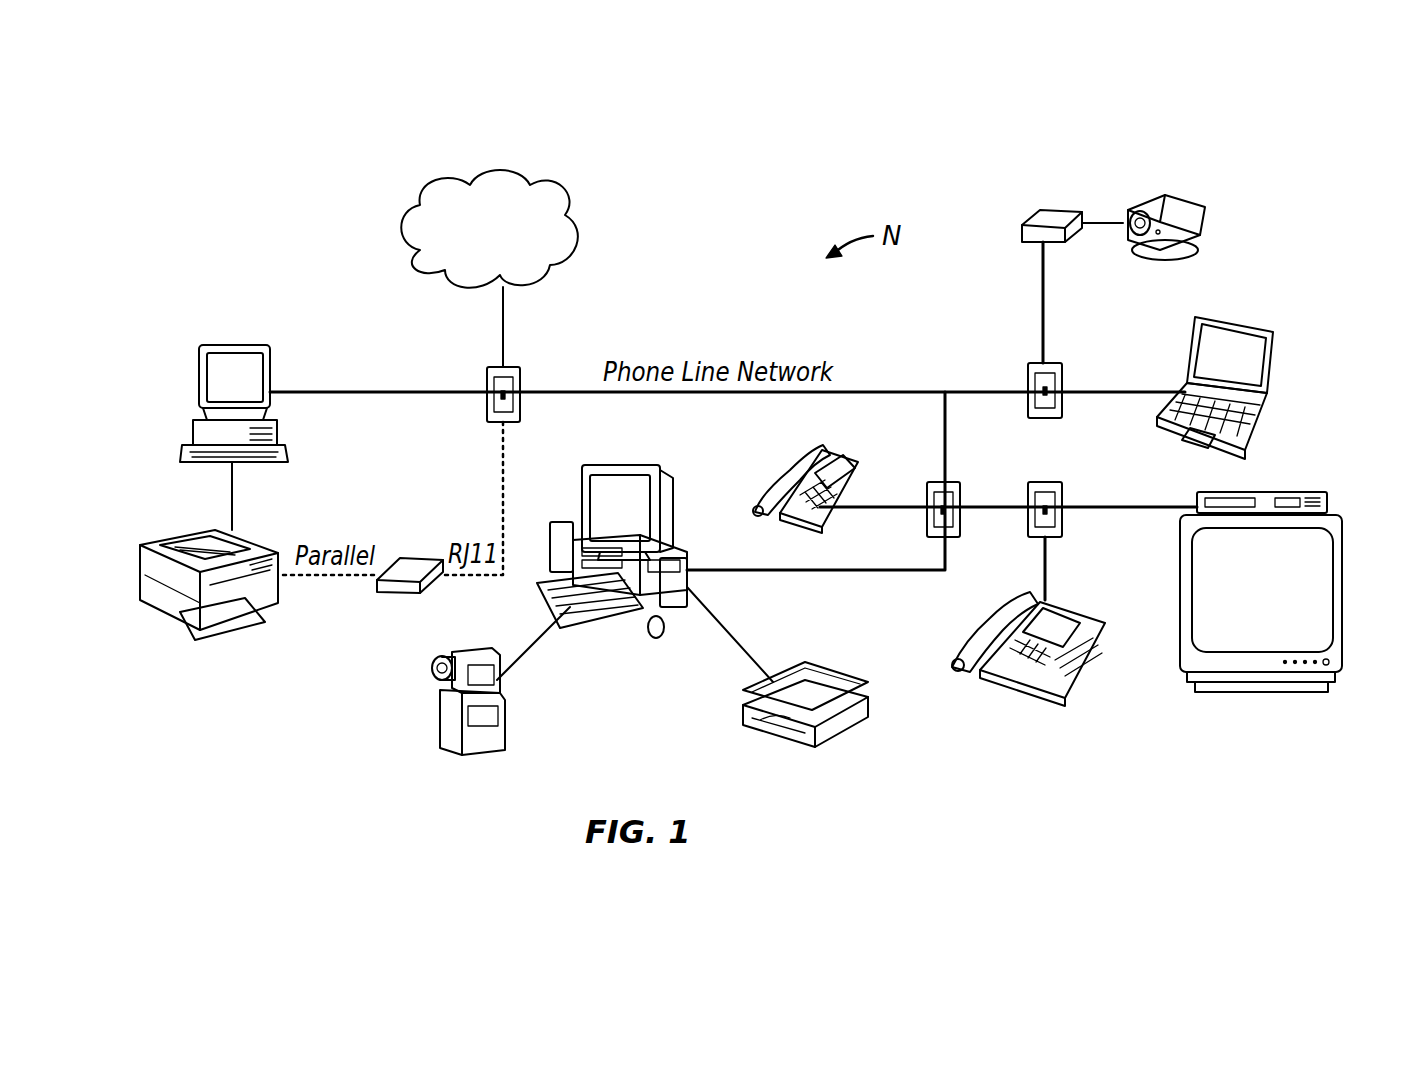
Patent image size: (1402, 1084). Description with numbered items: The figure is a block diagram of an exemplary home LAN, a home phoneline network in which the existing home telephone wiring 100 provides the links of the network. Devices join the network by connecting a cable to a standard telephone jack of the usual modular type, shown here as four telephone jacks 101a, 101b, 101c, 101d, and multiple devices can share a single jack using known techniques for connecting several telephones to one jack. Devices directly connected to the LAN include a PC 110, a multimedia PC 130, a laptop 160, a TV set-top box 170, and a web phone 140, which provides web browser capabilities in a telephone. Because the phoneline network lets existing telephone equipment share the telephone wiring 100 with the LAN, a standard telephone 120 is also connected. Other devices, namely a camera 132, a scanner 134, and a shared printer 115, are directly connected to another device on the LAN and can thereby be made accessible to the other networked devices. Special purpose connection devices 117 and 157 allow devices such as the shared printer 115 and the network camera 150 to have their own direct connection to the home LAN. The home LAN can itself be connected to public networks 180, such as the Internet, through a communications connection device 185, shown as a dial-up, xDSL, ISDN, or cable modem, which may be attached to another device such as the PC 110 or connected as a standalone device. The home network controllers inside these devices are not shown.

The home telephone wiring 100 is at (867, 390).
The RJ-11 telephone jack 101a is at (507, 367).
The RJ-11 telephone jack 101b is at (950, 482).
The RJ-11 telephone jack 101c is at (1050, 363).
The RJ-11 telephone jack 101d is at (1050, 482).
The PC 110 is at (215, 343).
The shared printer 115 is at (182, 528).
The special purpose connection device 117 is at (393, 593).
The standard telephone 120 is at (838, 450).
The multimedia PC 130 is at (633, 465).
The camera 132 is at (458, 652).
The scanner 134 is at (840, 672).
The web phone 140 is at (1070, 605).
The network camera 150 is at (1180, 195).
The special purpose connection device 157 is at (1065, 208).
The laptop 160 is at (1275, 358).
The TV set-top box 170 is at (1295, 492).
The public networks 180 is at (470, 185).
The communications connection device 185 is at (355, 275).